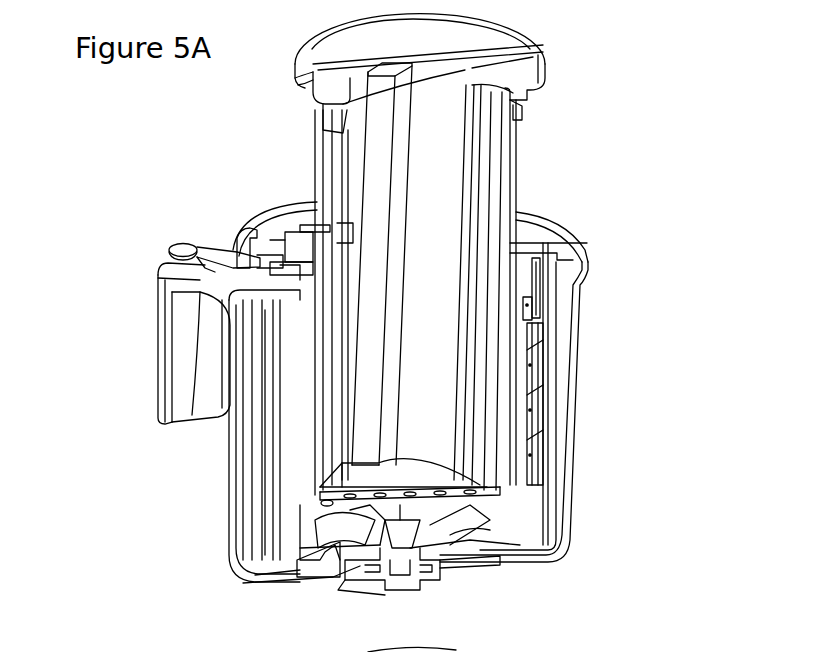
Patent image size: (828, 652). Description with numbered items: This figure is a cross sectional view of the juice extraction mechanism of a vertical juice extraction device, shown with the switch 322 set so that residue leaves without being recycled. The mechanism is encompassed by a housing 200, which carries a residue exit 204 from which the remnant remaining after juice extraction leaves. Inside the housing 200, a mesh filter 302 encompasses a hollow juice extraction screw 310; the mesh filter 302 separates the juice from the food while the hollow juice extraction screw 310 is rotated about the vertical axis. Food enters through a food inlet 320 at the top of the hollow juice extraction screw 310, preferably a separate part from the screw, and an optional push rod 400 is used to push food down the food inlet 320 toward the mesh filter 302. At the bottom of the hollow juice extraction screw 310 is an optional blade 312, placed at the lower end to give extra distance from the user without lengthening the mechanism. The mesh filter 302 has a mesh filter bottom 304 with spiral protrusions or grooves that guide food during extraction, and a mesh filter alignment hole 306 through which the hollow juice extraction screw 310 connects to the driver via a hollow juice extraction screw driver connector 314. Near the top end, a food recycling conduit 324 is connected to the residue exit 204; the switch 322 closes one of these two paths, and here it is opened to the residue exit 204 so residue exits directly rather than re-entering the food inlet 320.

The push rod 400 is at (552, 66).
The housing 200 is at (236, 468).
The residue exit 204 is at (190, 348).
The food inlet 320 is at (458, 207).
The switch 322 is at (232, 252).
The food recycling conduit 324 is at (291, 243).
The hollow juice extraction screw 310 is at (530, 302).
The mesh filter 302 is at (533, 407).
The blade 312 is at (502, 497).
The mesh filter bottom 304 is at (290, 565).
The mesh filter alignment hole 306 is at (400, 572).
The hollow juice extraction screw driver connector 314 is at (442, 568).